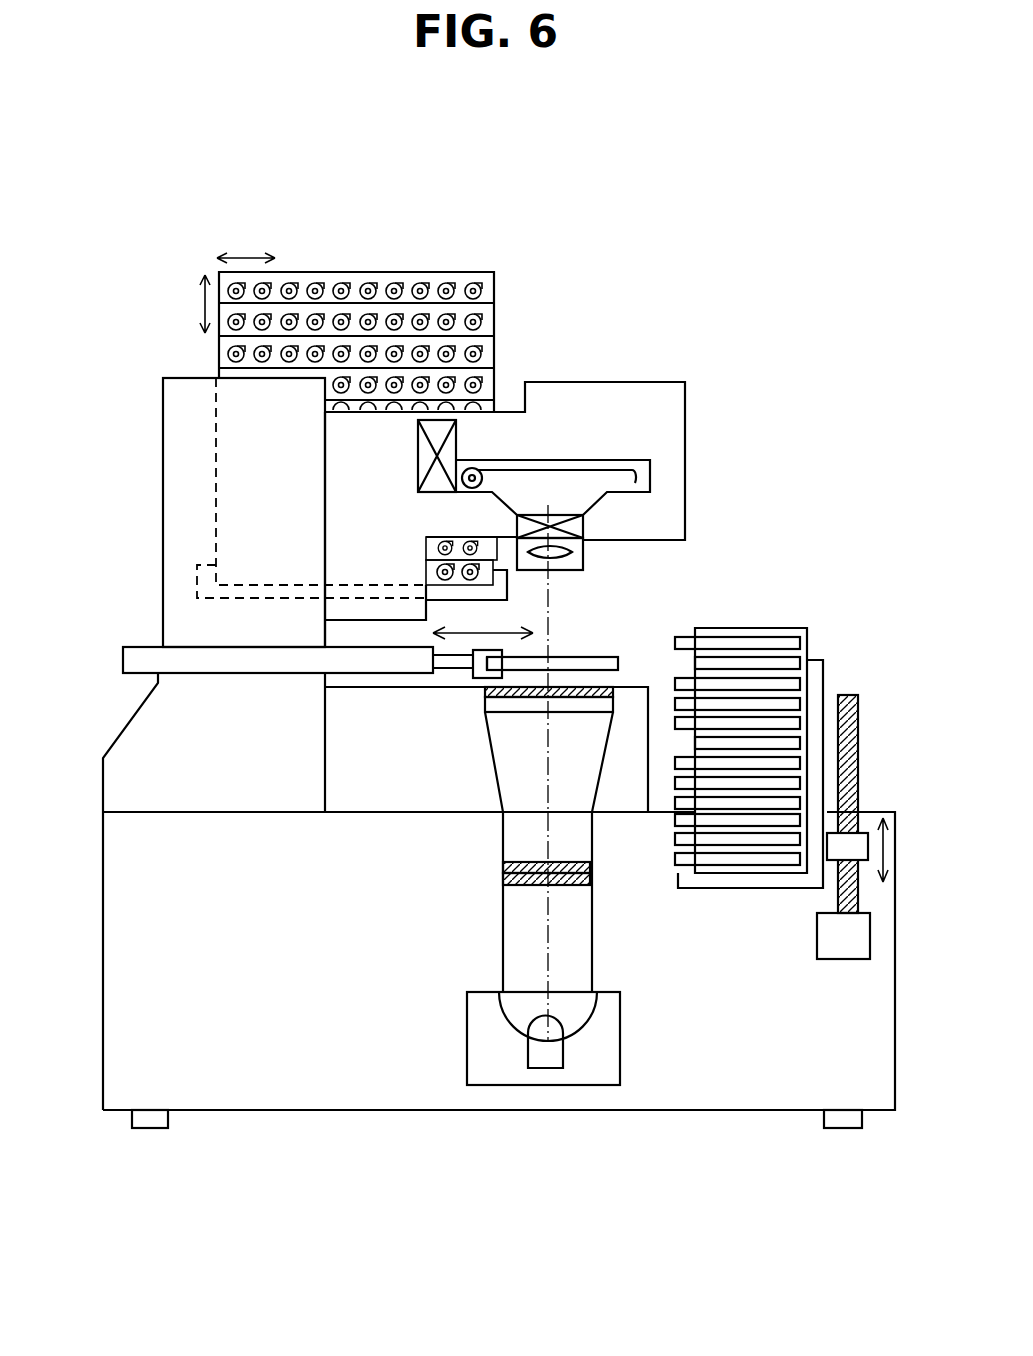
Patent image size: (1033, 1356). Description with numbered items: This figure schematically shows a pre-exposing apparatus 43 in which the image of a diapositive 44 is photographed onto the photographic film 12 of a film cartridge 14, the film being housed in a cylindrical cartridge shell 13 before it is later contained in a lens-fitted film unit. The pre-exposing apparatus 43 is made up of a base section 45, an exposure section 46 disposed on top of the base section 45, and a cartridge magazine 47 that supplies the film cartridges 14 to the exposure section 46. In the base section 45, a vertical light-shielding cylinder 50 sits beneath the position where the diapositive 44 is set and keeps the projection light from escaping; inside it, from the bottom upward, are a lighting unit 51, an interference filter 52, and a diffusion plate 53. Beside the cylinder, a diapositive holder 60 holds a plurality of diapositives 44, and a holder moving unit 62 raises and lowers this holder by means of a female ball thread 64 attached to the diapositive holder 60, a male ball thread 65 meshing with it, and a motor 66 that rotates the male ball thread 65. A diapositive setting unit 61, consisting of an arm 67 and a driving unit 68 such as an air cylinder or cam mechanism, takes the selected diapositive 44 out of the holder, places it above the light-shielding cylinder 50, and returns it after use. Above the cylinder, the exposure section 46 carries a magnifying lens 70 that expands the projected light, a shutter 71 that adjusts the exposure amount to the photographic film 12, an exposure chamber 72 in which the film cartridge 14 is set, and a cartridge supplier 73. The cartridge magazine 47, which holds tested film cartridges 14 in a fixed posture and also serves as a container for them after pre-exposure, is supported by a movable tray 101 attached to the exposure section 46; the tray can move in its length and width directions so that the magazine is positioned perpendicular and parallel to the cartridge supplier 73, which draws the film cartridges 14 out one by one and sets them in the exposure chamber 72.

The photographic film 12 is at (650, 470).
The cartridge shell 13 is at (480, 468).
The film cartridge 14 is at (374, 290).
The pre-exposing apparatus 43 is at (672, 280).
The diapositive 44 is at (583, 657).
The base section 45 is at (368, 1140).
The exposure section 46 is at (145, 411).
The cartridge magazine 47 is at (340, 262).
The light-shielding cylinder 50 is at (490, 750).
The lighting unit 51 is at (478, 1042).
The interference filter 52 is at (537, 887).
The diffusion plate 53 is at (523, 697).
The diapositive holder 60 is at (822, 642).
The diapositive setting unit 61 is at (135, 647).
The holder moving unit 62 is at (845, 985).
The female ball thread 64 is at (862, 843).
The male ball thread 65 is at (848, 695).
The motor 66 is at (827, 937).
The arm 67 is at (473, 663).
The driving unit 68 is at (245, 668).
The magnifying lens 70 is at (583, 553).
The shutter 71 is at (583, 533).
The exposure chamber 72 is at (603, 458).
The cartridge supplier 73 is at (418, 456).
The movable tray 101 is at (197, 582).